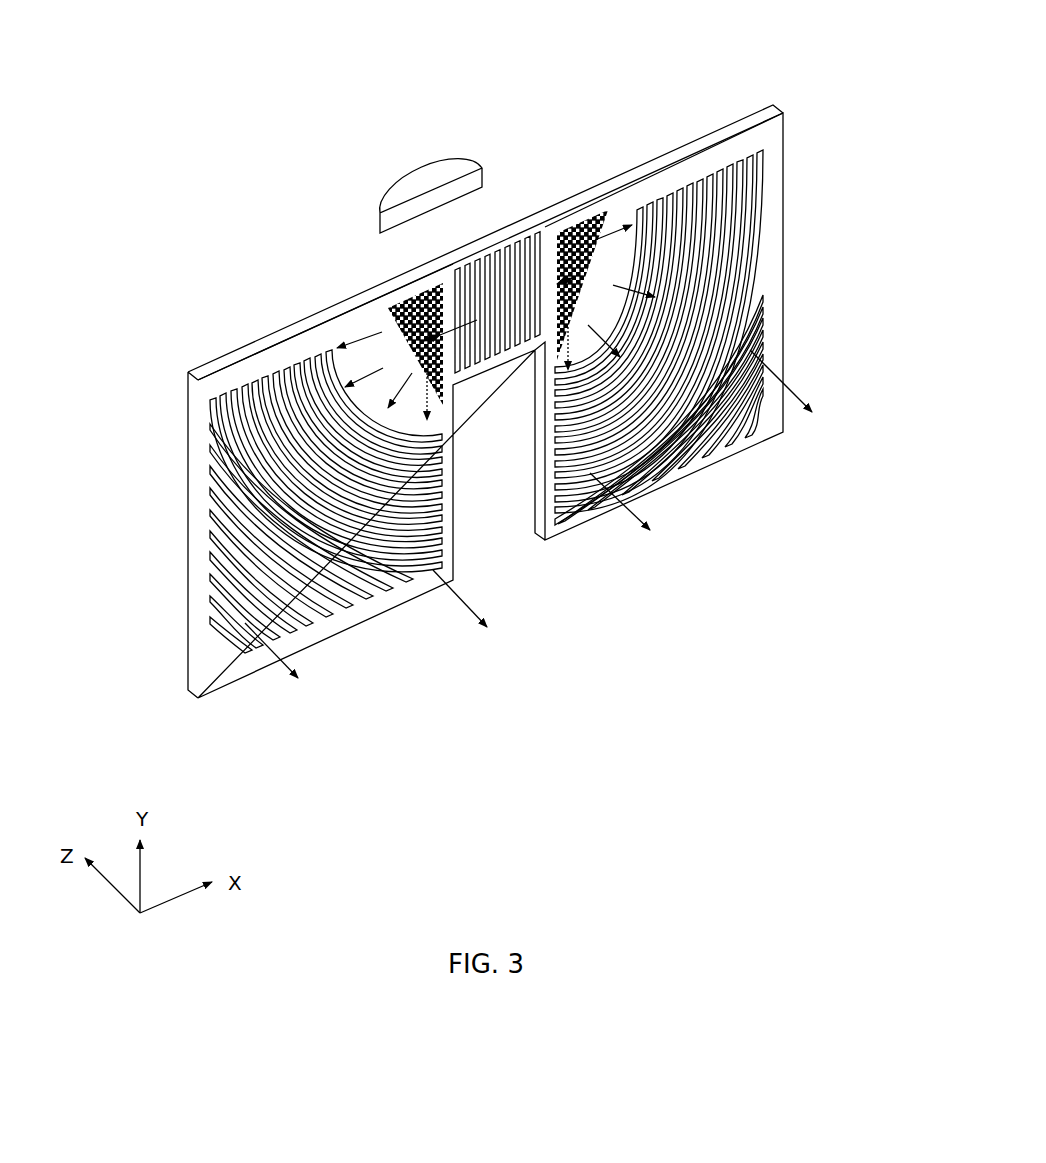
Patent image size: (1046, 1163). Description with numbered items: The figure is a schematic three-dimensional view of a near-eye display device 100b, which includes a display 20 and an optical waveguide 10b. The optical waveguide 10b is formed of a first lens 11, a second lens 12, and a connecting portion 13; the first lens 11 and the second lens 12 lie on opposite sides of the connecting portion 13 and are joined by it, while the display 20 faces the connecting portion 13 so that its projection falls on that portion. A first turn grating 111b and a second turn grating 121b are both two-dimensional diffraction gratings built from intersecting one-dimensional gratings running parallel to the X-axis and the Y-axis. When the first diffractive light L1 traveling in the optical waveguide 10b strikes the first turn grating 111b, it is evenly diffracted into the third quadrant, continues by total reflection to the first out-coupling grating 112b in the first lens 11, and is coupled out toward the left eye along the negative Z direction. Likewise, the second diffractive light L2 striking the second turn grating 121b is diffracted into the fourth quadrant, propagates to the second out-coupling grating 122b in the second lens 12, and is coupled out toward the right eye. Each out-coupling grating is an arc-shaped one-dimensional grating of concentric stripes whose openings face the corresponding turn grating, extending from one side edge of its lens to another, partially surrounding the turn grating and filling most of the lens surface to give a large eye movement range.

The near-eye display device 100b is at (460, 39).
The optical waveguide 10b is at (152, 623).
The first lens 11 is at (288, 334).
The second lens 12 is at (693, 173).
The connecting portion 13 is at (516, 231).
The first turn grating 111b is at (392, 313).
The first out-coupling grating 112b is at (210, 477).
The second turn grating 121b is at (601, 211).
The second out-coupling grating 122b is at (760, 283).
The first diffractive light L1 is at (433, 293).
The second diffractive light L2 is at (549, 285).
The display 20 is at (420, 177).